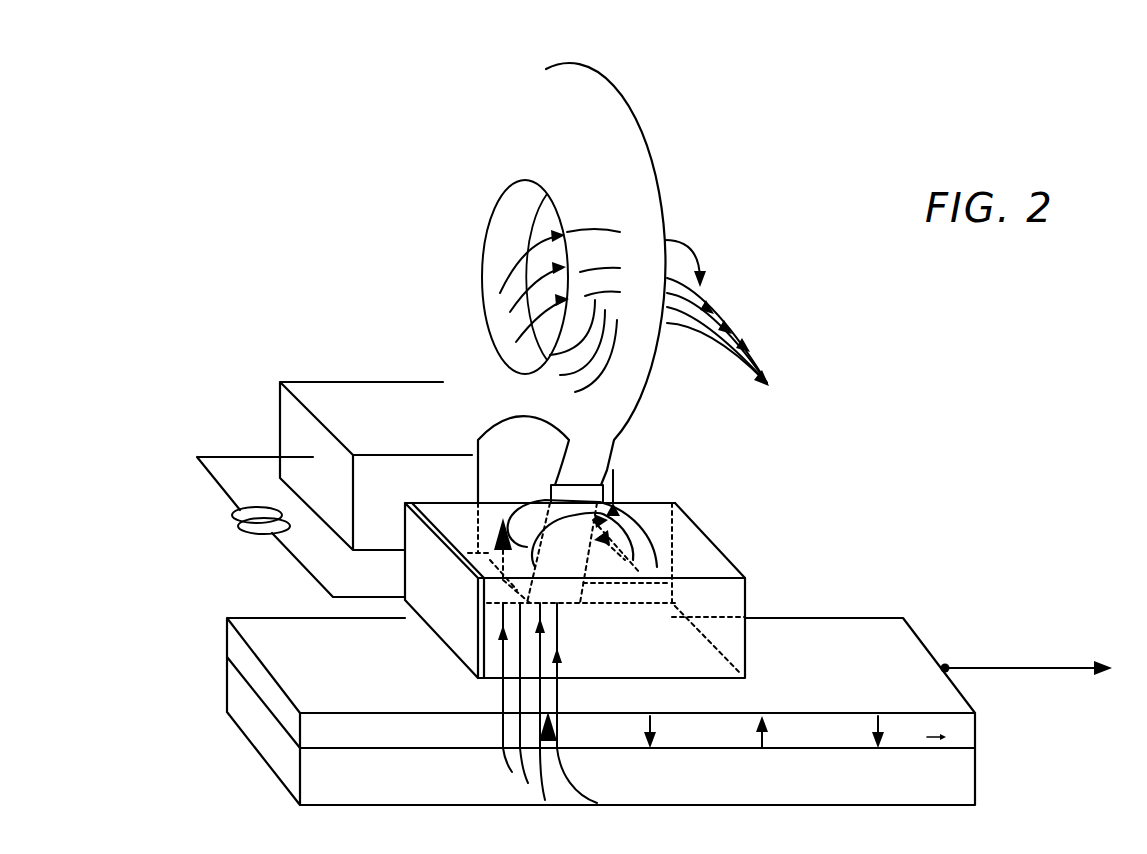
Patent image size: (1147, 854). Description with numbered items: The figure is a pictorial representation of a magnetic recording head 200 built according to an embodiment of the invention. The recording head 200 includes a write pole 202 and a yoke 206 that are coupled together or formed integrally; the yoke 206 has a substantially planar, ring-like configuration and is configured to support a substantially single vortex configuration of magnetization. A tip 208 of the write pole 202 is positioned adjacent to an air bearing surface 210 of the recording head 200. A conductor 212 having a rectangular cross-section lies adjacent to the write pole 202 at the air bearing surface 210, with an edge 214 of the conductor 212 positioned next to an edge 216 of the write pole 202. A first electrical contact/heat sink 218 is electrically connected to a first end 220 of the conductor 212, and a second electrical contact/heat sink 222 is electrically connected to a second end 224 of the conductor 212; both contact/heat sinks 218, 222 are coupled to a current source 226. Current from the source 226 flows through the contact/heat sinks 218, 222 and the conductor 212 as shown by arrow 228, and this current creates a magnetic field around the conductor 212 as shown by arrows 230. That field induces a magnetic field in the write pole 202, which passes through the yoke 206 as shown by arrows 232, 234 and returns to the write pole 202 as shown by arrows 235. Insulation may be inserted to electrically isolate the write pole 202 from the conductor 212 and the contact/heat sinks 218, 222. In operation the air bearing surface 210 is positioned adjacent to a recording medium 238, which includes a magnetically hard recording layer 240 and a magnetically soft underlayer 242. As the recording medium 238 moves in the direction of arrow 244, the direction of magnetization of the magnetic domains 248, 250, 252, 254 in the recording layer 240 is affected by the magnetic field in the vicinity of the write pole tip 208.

The magnetic recording head 200 is at (707, 97).
The write pole 202 is at (512, 492).
The yoke 206 is at (465, 212).
The tip 208 is at (495, 563).
The air bearing surface 210 is at (552, 588).
The conductor 212 is at (647, 590).
The edge 214 is at (580, 592).
The edge 216 is at (593, 588).
The first electrical contact/heat sink 218 is at (318, 405).
The first end 220 is at (615, 503).
The second electrical contact/heat sink 222 is at (733, 650).
The second end 224 is at (660, 593).
The current source 226 is at (232, 517).
The arrow 228 is at (625, 560).
The arrows 230 is at (628, 520).
The arrows 232 is at (500, 563).
The arrows 234 is at (700, 300).
The arrows 235 is at (527, 777).
The recording medium 238 is at (1012, 762).
The magnetically hard recording layer 240 is at (965, 735).
The magnetically soft underlayer 242 is at (965, 790).
The arrow 244 is at (1020, 668).
The magnetic domain 248 is at (540, 735).
The magnetic domain 250 is at (655, 722).
The magnetic domain 252 is at (770, 740).
The magnetic domain 254 is at (882, 718).